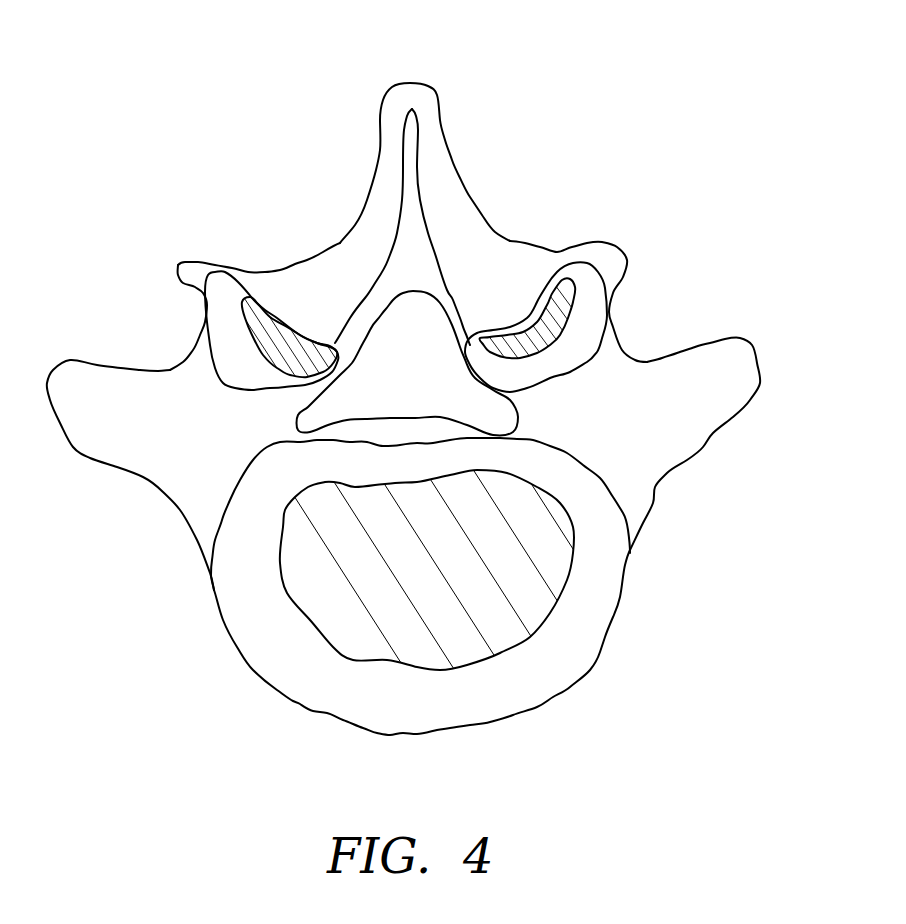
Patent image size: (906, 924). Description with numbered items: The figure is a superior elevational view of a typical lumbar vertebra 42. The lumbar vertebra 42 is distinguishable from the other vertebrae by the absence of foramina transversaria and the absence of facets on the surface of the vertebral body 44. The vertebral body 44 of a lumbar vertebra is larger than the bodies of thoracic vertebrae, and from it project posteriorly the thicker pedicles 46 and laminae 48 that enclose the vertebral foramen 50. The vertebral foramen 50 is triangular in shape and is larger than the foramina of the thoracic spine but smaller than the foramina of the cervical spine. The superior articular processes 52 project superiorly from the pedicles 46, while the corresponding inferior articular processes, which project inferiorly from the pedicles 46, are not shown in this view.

The lumbar vertebra 42 is at (403, 375).
The vertebral body 44 is at (367, 592).
The pedicle 46 is at (248, 423).
The lamina 48 is at (327, 295).
The vertebral foramen 50 is at (405, 345).
The superior articular process 52 is at (270, 338).